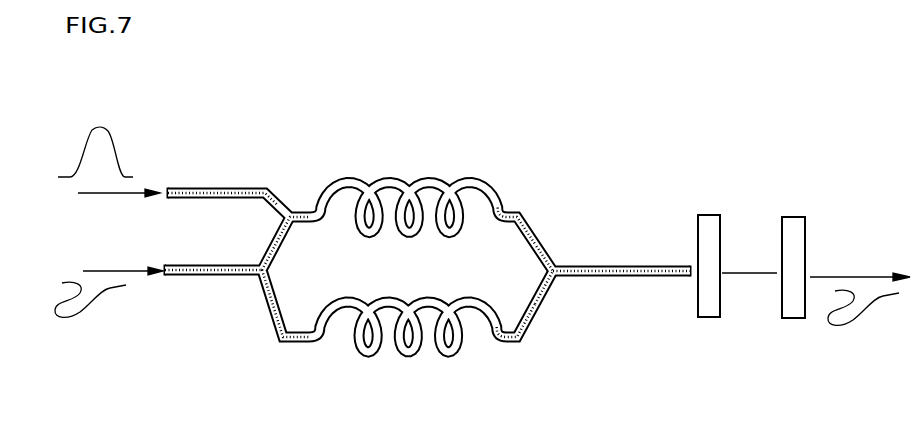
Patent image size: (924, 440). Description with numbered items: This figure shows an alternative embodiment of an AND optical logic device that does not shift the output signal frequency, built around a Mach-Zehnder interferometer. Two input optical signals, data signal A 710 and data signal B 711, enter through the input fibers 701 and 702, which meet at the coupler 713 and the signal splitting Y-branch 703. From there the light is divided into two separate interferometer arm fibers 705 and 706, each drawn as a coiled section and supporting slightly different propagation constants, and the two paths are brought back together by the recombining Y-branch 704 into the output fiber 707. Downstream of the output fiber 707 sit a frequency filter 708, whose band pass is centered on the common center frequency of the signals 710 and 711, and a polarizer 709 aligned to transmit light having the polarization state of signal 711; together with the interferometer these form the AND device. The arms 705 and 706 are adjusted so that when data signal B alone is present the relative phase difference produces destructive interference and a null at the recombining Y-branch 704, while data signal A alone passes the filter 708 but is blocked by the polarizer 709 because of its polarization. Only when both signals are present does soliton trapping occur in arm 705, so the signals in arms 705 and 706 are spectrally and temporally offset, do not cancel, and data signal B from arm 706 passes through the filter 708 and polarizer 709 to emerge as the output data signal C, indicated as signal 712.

The input fiber 701 is at (255, 197).
The input fiber 702 is at (182, 263).
The coupler 713 is at (295, 212).
The signal splitting Y-branch 703 is at (277, 295).
The recombining Y-branch 704 is at (548, 311).
The interferometer arm fiber 705 is at (517, 213).
The interferometer arm fiber 706 is at (512, 343).
The output fiber 707 is at (625, 265).
The frequency filter 708 is at (706, 317).
The polarizer 709 is at (782, 218).
The optical signal (data signal A) 710 is at (110, 138).
The optical signal (data signal B) 711 is at (106, 319).
The signal C 712 is at (857, 327).